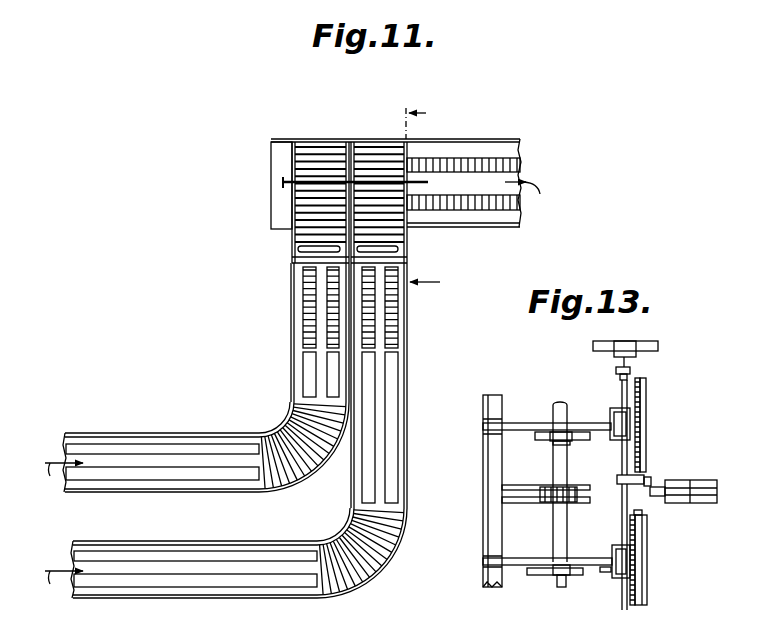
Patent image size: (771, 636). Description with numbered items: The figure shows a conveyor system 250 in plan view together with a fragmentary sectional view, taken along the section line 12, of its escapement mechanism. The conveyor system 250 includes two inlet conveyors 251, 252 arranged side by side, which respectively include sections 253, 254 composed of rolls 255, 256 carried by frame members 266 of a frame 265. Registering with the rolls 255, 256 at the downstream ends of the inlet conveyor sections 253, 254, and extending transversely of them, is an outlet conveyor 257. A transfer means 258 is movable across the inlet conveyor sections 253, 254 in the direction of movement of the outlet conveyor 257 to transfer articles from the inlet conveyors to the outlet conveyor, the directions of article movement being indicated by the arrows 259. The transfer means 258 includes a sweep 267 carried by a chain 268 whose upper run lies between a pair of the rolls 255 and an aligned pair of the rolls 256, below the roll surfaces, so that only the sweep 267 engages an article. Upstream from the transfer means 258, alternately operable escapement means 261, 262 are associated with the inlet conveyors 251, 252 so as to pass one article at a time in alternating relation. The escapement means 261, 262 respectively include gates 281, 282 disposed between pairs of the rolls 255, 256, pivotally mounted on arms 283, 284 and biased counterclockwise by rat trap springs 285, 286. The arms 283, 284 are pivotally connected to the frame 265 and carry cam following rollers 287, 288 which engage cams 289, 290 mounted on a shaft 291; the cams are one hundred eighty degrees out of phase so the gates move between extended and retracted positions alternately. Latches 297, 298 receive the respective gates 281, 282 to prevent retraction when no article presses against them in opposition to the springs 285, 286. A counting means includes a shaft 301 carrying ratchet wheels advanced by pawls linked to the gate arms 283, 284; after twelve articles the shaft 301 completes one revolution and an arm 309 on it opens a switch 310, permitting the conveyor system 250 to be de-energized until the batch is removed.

In FIG. 11, the section line 12- 12 is at (423, 197).
In FIG. 11, the conveyor system 250 is at (273, 340).
In FIG. 11, the inlet conveyor 251 is at (300, 312).
In FIG. 11, the inlet conveyor 252 is at (398, 318).
In FIG. 11, the inlet conveyor section 253 is at (289, 238).
In FIG. 11, the inlet conveyor section 254 is at (410, 240).
In FIG. 11, the rolls 255 is at (306, 150).
In FIG. 11, the rolls 256 is at (371, 152).
In FIG. 11, the outlet conveyor 257 is at (478, 152).
In FIG. 11, the transfer means 258 is at (312, 182).
In FIG. 11, the arrows 259 is at (295, 392).
In FIG. 11, the escapement means 261 is at (310, 250).
In FIG. 13, the escapement means 261 is at (640, 394).
In FIG. 11, the escapement means 262 is at (388, 252).
In FIG. 13, the escapement means 262 is at (636, 549).
In FIG. 13, the frame 265 is at (479, 504).
In FIG. 11, the frame members 266 is at (335, 150).
In FIG. 11, the sweep 267 is at (280, 189).
In FIG. 11, the chain 268 is at (282, 184).
In FIG. 11, the gate 281 is at (310, 254).
In FIG. 13, the gate 281 is at (641, 418).
In FIG. 11, the gate 282 is at (400, 254).
In FIG. 13, the gate 282 is at (646, 566).
In FIG. 13, the arm 283 is at (521, 422).
In FIG. 13, the arm 284 is at (531, 551).
In FIG. 13, the rat trap spring 285 is at (616, 412).
In FIG. 13, the rat trap spring 286 is at (617, 546).
In FIG. 13, the cam following roller 287 is at (567, 448).
In FIG. 13, the cam following roller 288 is at (570, 582).
In FIG. 13, the cam 289 is at (545, 440).
In FIG. 13, the cam 290 is at (545, 577).
In FIG. 13, the shaft 291 is at (558, 516).
In FIG. 13, the latch 297 is at (646, 432).
In FIG. 13, the latch 298 is at (648, 601).
In FIG. 13, the shaft 301 is at (628, 607).
In FIG. 13, the arm 309 is at (647, 477).
In FIG. 13, the switch 310 is at (665, 498).